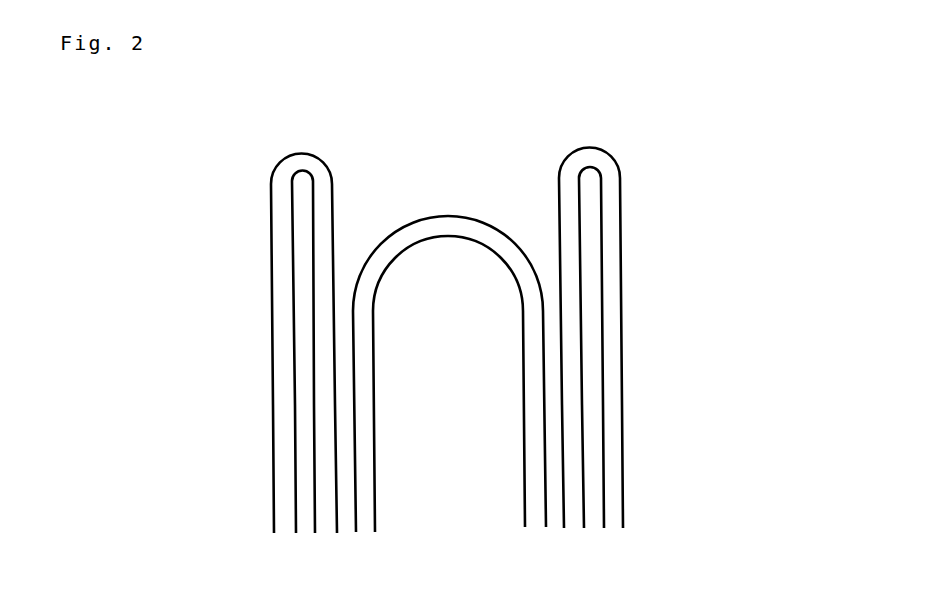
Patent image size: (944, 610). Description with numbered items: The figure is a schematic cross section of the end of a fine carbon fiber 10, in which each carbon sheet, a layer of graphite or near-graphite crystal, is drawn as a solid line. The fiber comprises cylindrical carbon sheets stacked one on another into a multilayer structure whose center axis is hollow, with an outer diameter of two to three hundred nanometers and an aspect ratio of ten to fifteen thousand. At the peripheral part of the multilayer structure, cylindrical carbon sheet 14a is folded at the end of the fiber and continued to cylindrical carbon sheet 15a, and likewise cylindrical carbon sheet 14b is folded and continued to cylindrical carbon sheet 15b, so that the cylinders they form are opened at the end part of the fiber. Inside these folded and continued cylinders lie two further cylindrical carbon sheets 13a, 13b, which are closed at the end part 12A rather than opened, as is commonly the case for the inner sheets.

The fine carbon fiber 10 is at (597, 140).
The end part 12A is at (455, 212).
The cylindrical carbon sheet 13a is at (375, 388).
The cylindrical carbon sheet 13b is at (356, 431).
The cylindrical carbon sheet 14a is at (336, 478).
The cylindrical carbon sheet 14b is at (315, 430).
The cylindrical carbon sheet 15a is at (272, 337).
The cylindrical carbon sheet 15b is at (293, 381).